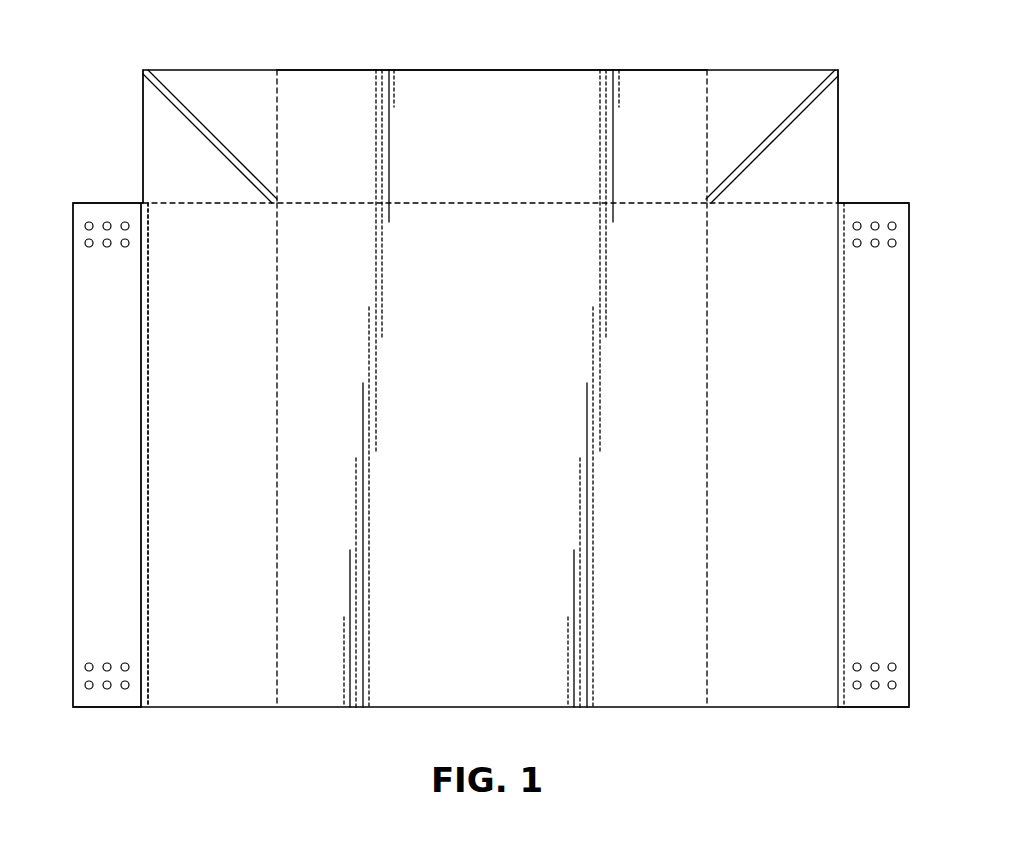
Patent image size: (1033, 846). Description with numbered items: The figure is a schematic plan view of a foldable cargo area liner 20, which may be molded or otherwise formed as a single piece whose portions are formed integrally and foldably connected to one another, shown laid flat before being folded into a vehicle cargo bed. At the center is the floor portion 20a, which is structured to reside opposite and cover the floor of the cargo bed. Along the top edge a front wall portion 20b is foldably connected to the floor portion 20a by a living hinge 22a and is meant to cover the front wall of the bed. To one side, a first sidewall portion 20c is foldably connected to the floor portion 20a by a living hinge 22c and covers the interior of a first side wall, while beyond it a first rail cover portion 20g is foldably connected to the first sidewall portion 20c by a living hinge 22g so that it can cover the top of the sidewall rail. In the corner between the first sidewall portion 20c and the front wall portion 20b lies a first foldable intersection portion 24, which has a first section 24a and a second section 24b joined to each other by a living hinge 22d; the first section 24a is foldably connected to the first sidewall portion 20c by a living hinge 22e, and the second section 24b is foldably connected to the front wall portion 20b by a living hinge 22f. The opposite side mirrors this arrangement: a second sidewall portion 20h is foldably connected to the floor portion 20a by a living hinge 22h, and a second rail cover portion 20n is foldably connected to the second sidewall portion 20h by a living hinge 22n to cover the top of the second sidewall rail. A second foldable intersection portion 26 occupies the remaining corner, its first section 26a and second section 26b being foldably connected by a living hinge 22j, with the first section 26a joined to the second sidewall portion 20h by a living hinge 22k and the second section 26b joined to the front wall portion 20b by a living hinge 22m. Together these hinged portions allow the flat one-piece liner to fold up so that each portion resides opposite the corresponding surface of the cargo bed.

The foldable cargo area liner 20 is at (92, 64).
The floor portion 20a is at (508, 410).
The front wall portion 20b is at (447, 138).
The first sidewall portion 20c is at (200, 233).
The first rail cover portion 20g is at (80, 588).
The second sidewall portion 20h is at (792, 426).
The second rail cover portion 20n is at (907, 277).
The living hinge 22a is at (343, 200).
The living hinge 22c is at (277, 327).
The living hinge 22d is at (220, 155).
The living hinge 22e is at (227, 205).
The living hinge 22f is at (273, 122).
The living hinge 22g is at (142, 630).
The living hinge 22h is at (707, 555).
The living hinge 22j is at (753, 148).
The living hinge 22k is at (762, 203).
The living hinge 22m is at (700, 154).
The living hinge 22n is at (837, 662).
The first foldable intersection portion 24 is at (141, 64).
The first section 24a is at (163, 123).
The second section 24b is at (227, 105).
The second foldable intersection portion 26 is at (778, 63).
The first section 26a is at (812, 144).
The second section 26b is at (755, 110).